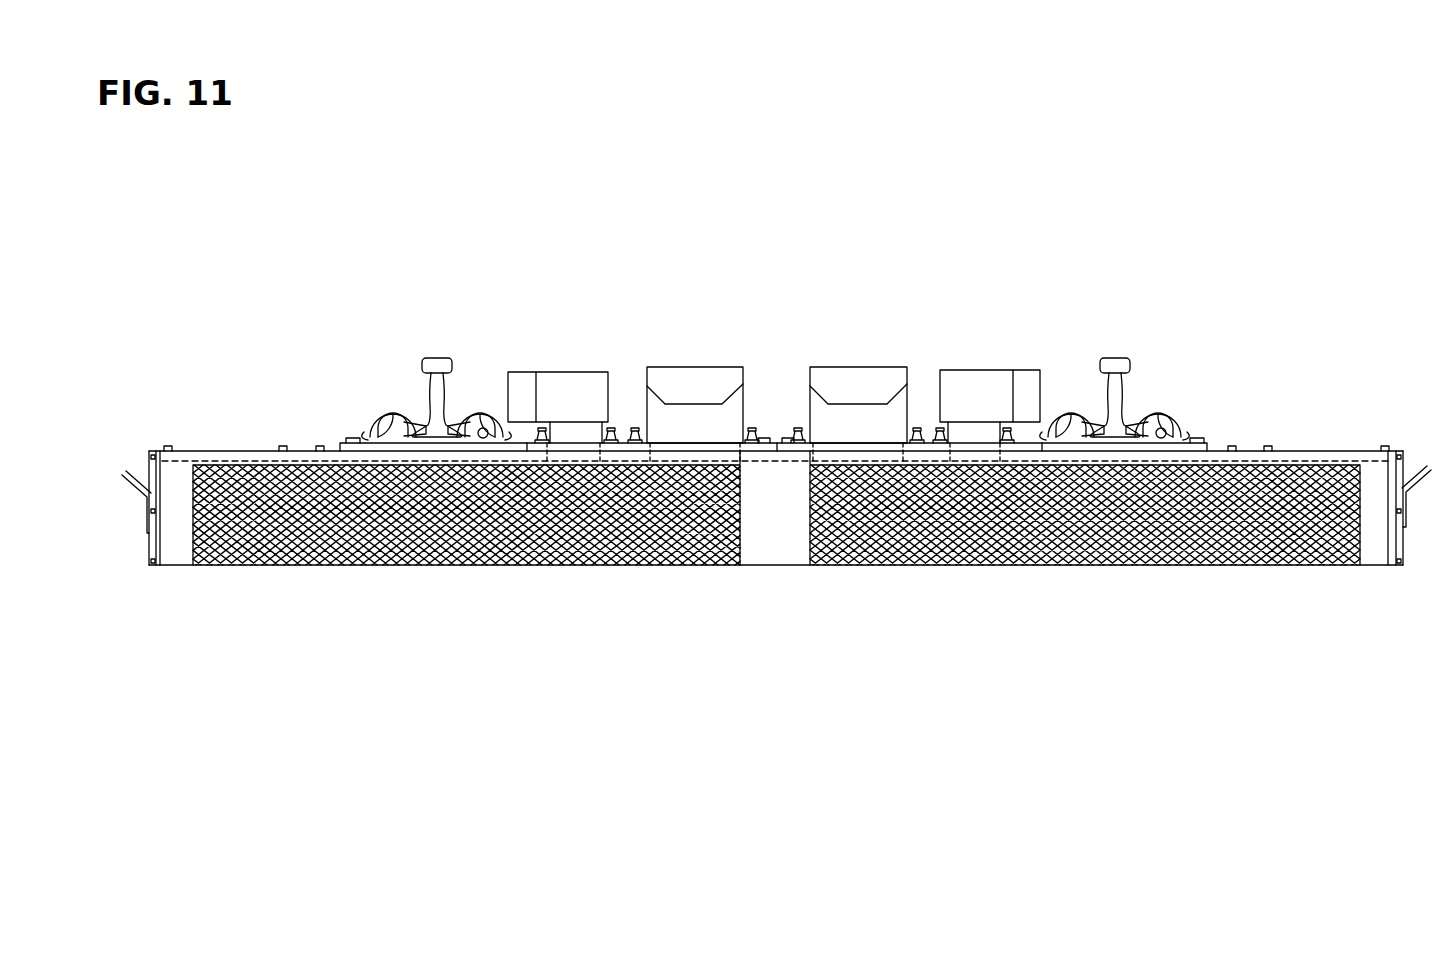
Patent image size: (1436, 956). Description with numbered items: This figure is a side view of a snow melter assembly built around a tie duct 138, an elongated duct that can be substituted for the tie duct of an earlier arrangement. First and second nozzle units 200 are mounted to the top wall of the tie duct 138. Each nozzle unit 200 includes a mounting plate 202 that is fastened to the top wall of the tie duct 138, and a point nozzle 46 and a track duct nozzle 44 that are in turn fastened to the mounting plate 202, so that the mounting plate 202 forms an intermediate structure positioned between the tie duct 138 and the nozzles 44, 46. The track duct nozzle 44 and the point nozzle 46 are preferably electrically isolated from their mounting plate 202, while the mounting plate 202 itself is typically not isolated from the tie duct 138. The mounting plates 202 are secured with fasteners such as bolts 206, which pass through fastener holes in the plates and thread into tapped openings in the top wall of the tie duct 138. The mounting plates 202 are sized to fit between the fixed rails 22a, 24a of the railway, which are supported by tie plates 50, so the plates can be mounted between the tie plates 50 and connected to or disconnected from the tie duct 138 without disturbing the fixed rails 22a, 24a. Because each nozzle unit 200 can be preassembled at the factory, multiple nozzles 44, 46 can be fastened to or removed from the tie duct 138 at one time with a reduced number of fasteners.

The fixed rail 22a is at (436, 357).
The fixed rail 24a is at (1116, 357).
The track duct nozzle 44 is at (706, 367).
The point nozzle 46 is at (565, 372).
The tie plate 50 is at (343, 450).
The tie duct 138 is at (282, 569).
The nozzle unit 200 is at (630, 363).
The mounting plate 202 is at (627, 445).
The bolt 206 is at (543, 445).